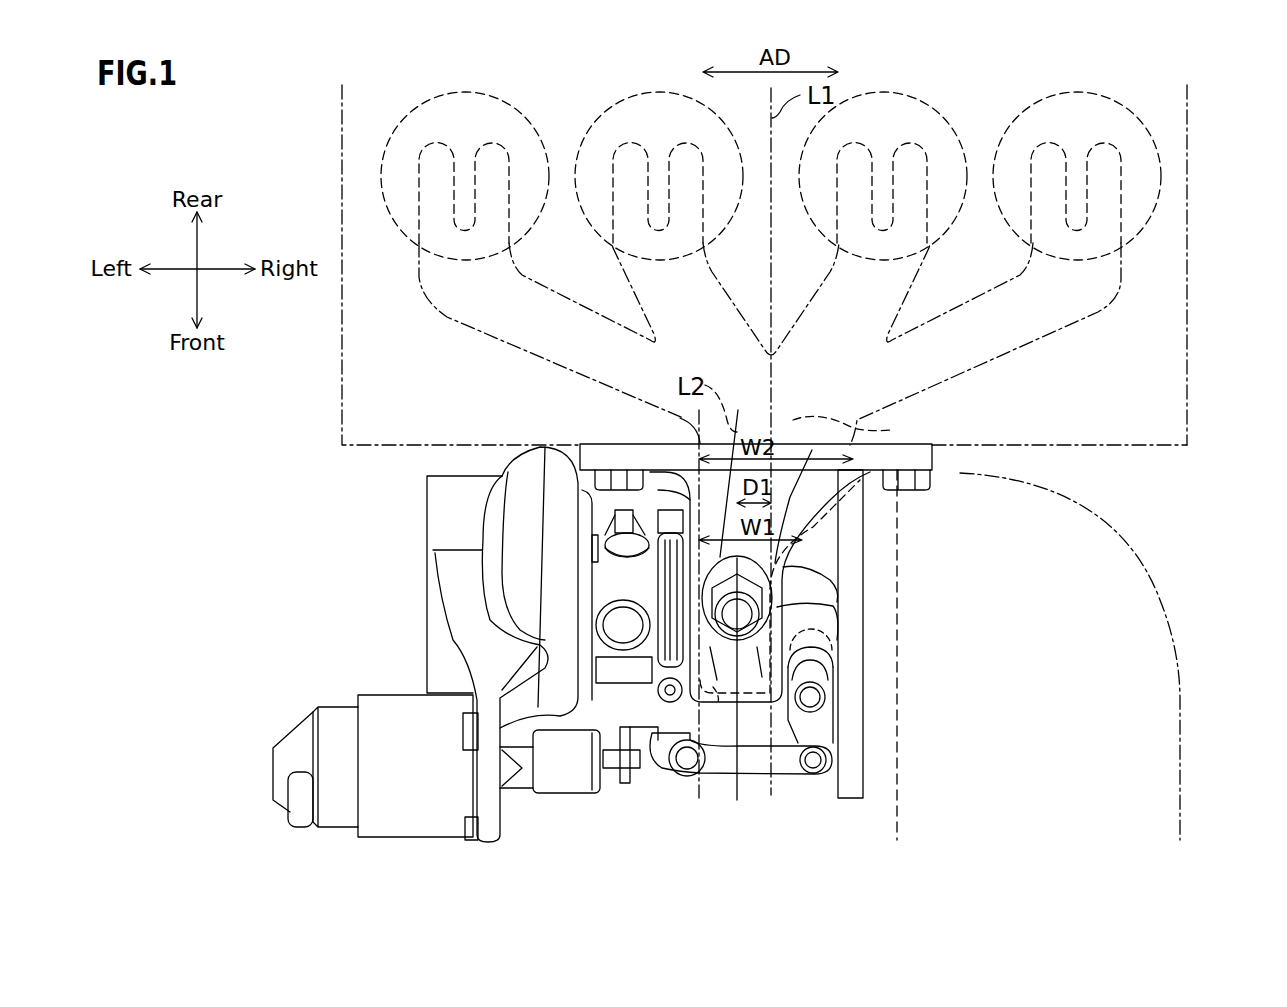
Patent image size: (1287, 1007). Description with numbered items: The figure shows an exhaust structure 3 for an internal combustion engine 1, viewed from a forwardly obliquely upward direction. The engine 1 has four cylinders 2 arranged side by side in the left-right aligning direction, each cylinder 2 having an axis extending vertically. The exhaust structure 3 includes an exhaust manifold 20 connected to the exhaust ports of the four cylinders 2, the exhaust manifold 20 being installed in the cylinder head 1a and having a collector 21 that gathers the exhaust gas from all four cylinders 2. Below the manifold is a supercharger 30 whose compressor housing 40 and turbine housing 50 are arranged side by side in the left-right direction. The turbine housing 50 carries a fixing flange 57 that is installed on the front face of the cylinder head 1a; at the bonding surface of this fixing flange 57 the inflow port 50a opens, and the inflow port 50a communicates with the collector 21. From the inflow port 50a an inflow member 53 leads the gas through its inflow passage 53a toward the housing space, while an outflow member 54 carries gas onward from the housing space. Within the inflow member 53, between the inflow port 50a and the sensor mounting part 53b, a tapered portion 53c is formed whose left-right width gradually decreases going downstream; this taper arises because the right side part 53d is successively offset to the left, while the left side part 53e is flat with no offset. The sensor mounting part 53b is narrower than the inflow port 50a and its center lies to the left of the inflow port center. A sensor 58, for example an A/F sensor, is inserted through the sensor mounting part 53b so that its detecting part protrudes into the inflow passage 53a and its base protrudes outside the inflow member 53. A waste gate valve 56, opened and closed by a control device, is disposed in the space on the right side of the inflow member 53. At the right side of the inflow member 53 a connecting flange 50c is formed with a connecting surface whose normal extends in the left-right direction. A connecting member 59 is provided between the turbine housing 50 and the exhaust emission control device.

The internal combustion engine 1 is at (1196, 163).
The cylinder head 1a is at (1192, 412).
The cylinder 2 is at (445, 103).
The exhaust structure 3 is at (1182, 512).
The exhaust manifold 20 is at (1021, 366).
The collector 21 is at (890, 430).
The supercharger 30 is at (596, 798).
The compressor housing 40 is at (501, 468).
The turbine housing 50 is at (752, 710).
The inflow port 50a is at (680, 418).
The connecting flange 50c is at (855, 800).
The inflow member 53 is at (790, 594).
The inflow passage 53a is at (718, 703).
The sensor mounting part 53b is at (775, 618).
The tapered portion 53c is at (820, 502).
The right side part 53d is at (795, 566).
The left side part 53e is at (697, 637).
The outflow member 54 is at (830, 569).
The waste gate valve 56 is at (825, 640).
The fixing flange 57 is at (945, 470).
The sensor 58 is at (745, 623).
The connecting member 59 is at (1152, 587).